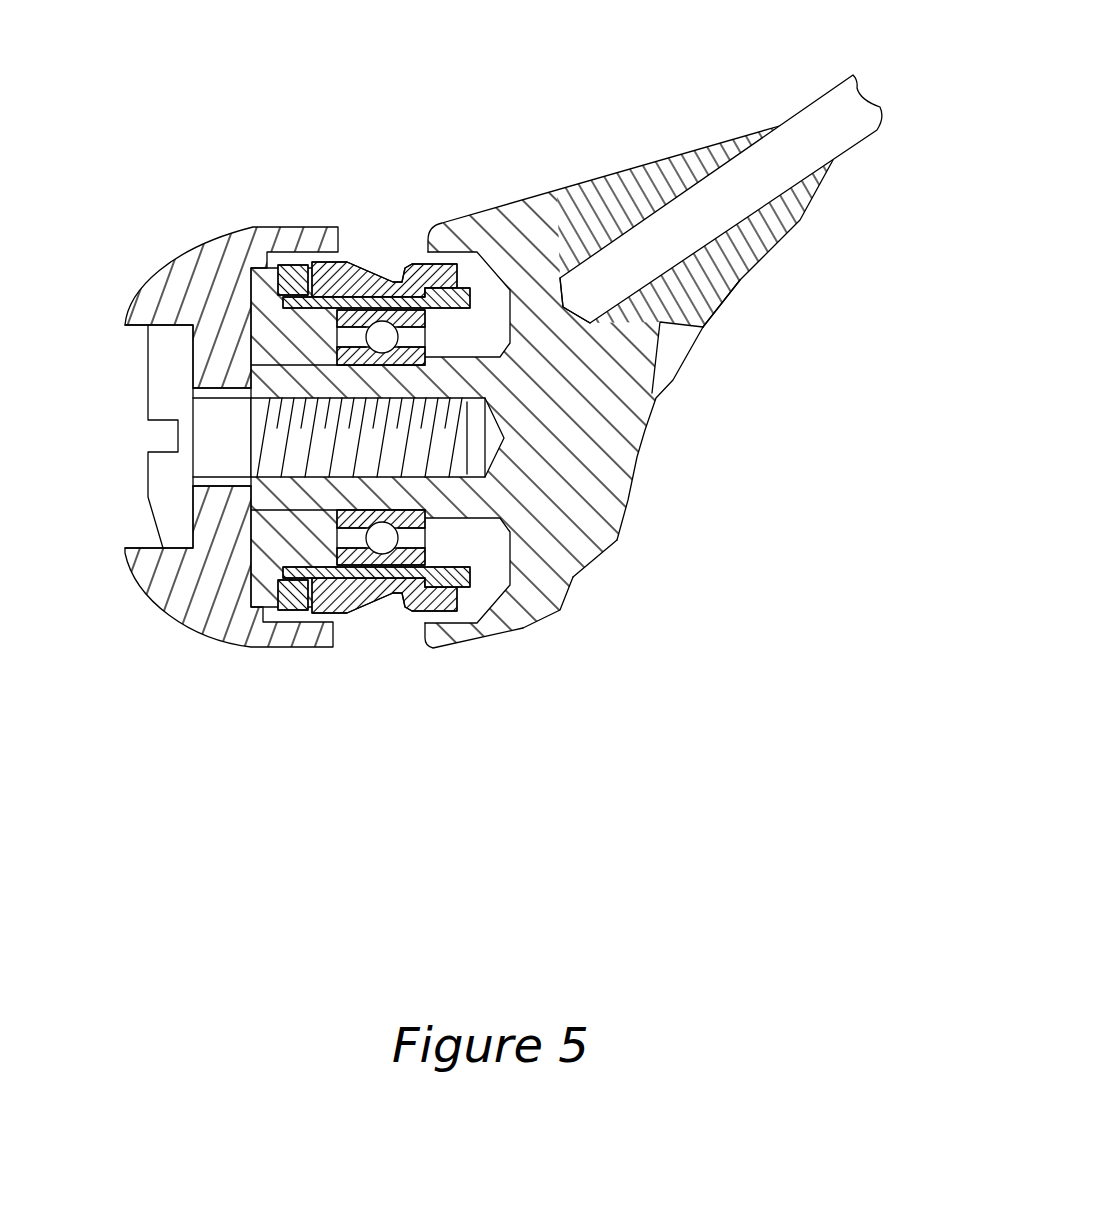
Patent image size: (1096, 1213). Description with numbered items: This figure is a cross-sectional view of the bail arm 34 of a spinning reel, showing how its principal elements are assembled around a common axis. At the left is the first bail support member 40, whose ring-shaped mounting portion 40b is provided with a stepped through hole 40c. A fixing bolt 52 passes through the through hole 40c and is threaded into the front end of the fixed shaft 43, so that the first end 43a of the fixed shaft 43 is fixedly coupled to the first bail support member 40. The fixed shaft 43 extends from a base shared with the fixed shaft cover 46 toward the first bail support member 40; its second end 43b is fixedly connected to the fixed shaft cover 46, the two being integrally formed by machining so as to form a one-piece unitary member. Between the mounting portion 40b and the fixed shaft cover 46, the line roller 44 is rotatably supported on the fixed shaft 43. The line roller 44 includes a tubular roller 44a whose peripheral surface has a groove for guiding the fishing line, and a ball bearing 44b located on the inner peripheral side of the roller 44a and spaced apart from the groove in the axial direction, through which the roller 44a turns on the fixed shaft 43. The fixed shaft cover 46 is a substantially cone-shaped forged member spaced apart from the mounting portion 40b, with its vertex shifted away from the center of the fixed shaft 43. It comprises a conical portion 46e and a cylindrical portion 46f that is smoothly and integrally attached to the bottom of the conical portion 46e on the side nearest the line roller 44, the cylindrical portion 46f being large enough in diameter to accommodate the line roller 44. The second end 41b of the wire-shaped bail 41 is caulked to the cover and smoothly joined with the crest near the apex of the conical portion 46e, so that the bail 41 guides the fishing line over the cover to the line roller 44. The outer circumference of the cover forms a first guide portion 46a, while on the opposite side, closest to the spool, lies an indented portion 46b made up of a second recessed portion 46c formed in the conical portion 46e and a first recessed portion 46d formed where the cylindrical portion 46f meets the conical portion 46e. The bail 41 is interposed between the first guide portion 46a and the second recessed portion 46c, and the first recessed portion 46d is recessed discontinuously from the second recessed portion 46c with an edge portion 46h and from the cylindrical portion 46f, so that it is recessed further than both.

The bail arm 34 is at (250, 698).
The first bail support member 40 is at (140, 642).
The mounting portion 40b is at (200, 627).
The stepped through hole 40c is at (150, 548).
The bail 41 is at (815, 105).
The second end of the bail 41b is at (587, 280).
The fixed shaft 43 is at (313, 500).
The first end of the fixed shaft 43a is at (250, 500).
The second end of the fixed shaft 43b is at (475, 510).
The line roller 44 is at (390, 248).
The tubular roller 44a is at (366, 258).
The ball bearing 44b is at (428, 310).
The fixed shaft cover 46 is at (600, 128).
The first guide portion 46a is at (670, 157).
The indented portion 46b is at (780, 237).
The second recessed portion 46c is at (637, 460).
The first recessed portion 46d is at (573, 579).
The conical portion 46e is at (743, 285).
The cylindrical portion 46f is at (525, 633).
The edge portion 46h is at (617, 541).
The fixing bolt 52 is at (167, 378).